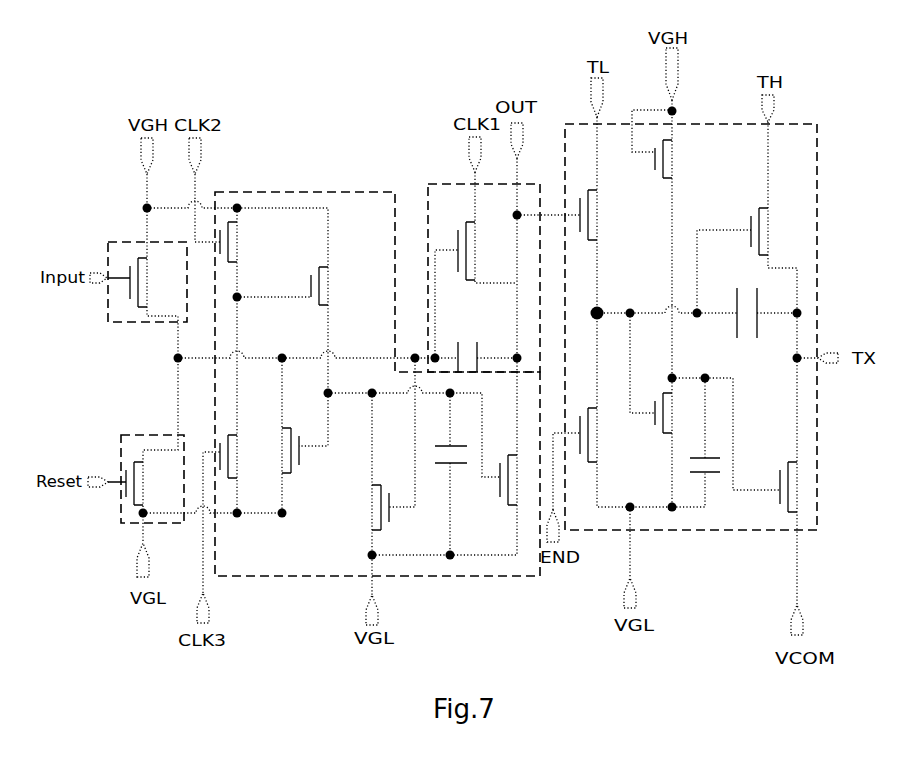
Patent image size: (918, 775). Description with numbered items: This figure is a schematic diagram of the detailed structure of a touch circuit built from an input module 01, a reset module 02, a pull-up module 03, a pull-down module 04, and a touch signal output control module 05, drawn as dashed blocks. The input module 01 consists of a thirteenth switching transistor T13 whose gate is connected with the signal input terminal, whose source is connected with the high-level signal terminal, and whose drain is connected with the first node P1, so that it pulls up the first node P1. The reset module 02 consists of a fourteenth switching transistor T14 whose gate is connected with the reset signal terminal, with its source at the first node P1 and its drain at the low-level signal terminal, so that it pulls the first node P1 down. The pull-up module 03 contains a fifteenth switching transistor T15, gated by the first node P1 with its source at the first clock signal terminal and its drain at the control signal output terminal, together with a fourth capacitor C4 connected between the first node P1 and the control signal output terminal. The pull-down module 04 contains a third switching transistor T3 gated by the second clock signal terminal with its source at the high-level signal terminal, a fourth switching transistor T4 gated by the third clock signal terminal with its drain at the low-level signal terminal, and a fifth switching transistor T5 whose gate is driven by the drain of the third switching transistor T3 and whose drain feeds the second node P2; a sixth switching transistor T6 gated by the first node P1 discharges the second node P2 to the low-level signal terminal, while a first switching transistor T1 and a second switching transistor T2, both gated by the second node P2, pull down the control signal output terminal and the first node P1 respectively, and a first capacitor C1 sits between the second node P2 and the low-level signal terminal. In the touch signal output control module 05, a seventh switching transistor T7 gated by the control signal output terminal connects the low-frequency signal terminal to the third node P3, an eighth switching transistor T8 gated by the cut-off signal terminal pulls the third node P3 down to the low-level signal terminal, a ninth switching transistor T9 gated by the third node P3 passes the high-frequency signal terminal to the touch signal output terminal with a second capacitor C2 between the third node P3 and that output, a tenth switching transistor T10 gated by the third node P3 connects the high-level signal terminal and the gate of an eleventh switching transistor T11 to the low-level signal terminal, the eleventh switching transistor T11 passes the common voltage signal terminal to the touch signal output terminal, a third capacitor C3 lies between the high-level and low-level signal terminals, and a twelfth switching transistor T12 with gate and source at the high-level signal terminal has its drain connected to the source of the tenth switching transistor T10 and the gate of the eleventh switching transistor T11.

The input module 01 is at (113, 238).
The reset module 02 is at (128, 528).
The pull-up module 03 is at (444, 184).
The pull-down module 04 is at (455, 578).
The touch signal output control module 05 is at (815, 484).
The first switching transistor T1 is at (516, 480).
The second switching transistor T2 is at (280, 450).
The third switching transistor T3 is at (241, 242).
The fourth switching transistor T4 is at (233, 456).
The fifth switching transistor T5 is at (330, 286).
The sixth switching transistor T6 is at (364, 507).
The seventh switching transistor T7 is at (601, 215).
The eighth switching transistor T8 is at (596, 435).
The ninth switching transistor T9 is at (773, 231).
The tenth switching transistor T10 is at (674, 413).
The eleventh switching transistor T11 is at (800, 487).
The twelfth switching transistor T12 is at (674, 159).
The thirteenth switching transistor T13 is at (142, 282).
The fourteenth switching transistor T14 is at (137, 483).
The fifteenth switching transistor T15 is at (483, 251).
The first capacitor C1 is at (454, 444).
The second capacitor C2 is at (746, 306).
The third capacitor C3 is at (702, 468).
The fourth capacitor C4 is at (466, 345).
The first node P1 is at (187, 347).
The second node P2 is at (337, 384).
The third node P3 is at (609, 303).